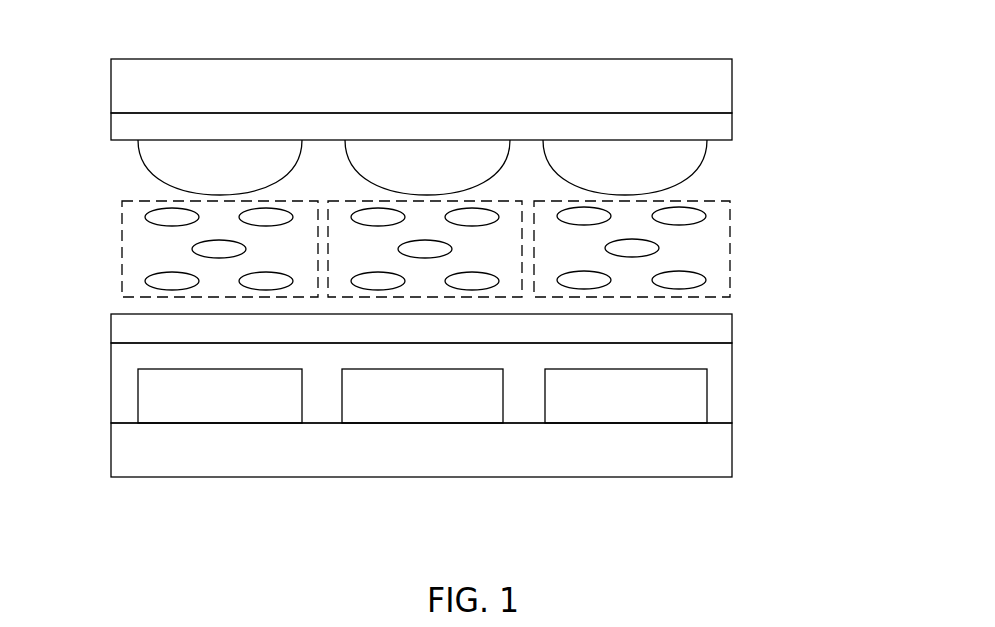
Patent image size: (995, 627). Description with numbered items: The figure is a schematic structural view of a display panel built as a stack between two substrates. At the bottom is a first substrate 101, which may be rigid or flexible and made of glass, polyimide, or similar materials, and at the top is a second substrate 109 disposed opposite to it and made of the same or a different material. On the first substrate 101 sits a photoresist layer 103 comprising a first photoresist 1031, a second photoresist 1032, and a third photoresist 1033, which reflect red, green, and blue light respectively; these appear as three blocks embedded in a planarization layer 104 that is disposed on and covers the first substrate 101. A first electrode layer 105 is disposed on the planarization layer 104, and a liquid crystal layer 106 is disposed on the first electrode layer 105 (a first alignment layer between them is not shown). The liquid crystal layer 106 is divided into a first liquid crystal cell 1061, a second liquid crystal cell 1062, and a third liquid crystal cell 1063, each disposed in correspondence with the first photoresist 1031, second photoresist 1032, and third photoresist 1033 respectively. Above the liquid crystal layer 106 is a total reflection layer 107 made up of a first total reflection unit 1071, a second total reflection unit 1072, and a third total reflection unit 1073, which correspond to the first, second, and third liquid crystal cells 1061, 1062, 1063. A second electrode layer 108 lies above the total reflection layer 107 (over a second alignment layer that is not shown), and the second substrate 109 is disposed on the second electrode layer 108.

The first substrate 101 is at (732, 450).
The photoresist layer 103 is at (502, 354).
The first photoresist 1031 is at (152, 396).
The second photoresist 1032 is at (420, 398).
The third photoresist 1033 is at (707, 410).
The planarization layer 104 is at (732, 385).
The first electrode layer 105 is at (732, 322).
The liquid crystal layer 106 is at (502, 297).
The first liquid crystal cell 1061 is at (138, 266).
The second liquid crystal cell 1062 is at (345, 260).
The third liquid crystal cell 1063 is at (700, 248).
The total reflection layer 107 is at (502, 270).
The first total reflection unit 1071 is at (160, 150).
The second total reflection unit 1072 is at (420, 163).
The third total reflection unit 1073 is at (678, 160).
The second electrode layer 108 is at (732, 125).
The second substrate 109 is at (732, 80).